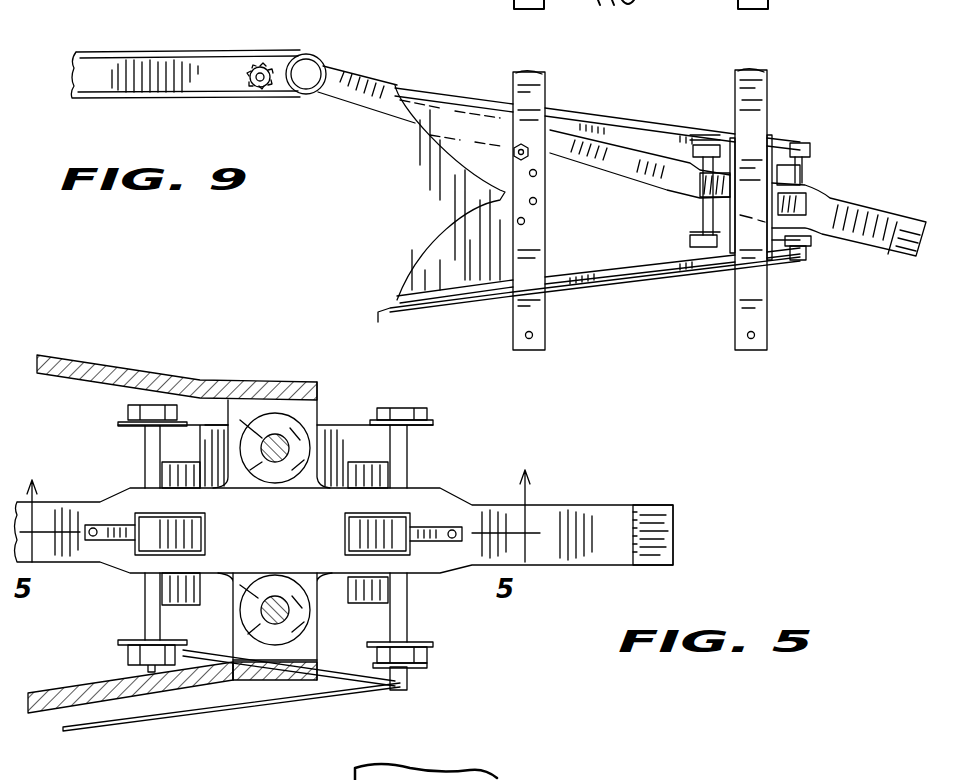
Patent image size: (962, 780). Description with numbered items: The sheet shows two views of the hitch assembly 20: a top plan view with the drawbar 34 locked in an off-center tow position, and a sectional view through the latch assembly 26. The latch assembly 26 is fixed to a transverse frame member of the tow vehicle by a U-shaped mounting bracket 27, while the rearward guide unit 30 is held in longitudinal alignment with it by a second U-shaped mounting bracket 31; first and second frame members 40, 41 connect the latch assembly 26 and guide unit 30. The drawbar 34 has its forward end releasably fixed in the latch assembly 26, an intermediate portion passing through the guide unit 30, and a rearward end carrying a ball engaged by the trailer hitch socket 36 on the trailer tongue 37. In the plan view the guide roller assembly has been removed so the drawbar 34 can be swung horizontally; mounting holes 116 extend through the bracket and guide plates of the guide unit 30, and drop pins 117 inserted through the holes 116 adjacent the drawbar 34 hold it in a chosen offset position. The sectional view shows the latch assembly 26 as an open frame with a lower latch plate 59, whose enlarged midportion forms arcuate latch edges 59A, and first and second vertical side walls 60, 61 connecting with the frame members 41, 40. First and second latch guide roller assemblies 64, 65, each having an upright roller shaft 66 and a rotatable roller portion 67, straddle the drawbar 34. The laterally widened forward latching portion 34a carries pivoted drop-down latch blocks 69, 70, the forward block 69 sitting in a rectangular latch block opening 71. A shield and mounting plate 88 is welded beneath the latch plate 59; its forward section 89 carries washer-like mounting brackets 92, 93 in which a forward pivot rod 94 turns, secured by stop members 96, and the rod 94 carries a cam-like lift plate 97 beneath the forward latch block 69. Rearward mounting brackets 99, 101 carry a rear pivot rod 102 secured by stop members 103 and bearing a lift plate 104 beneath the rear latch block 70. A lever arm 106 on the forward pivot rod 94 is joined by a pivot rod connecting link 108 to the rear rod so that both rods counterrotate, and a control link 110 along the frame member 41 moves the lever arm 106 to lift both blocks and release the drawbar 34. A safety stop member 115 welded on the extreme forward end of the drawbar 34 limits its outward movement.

In FIG. 9, the hitch assembly 20 is at (662, 312).
In FIG. 9, the latch assembly 26 is at (824, 263).
In FIG. 5, the latch assembly 26 is at (448, 684).
In FIG. 9, the U-shaped mounting bracket 27 is at (770, 104).
In FIG. 9, the guide unit 30 is at (415, 265).
In FIG. 9, the U-shaped mounting bracket 31 is at (545, 100).
In FIG. 9, the drawbar 34 is at (362, 110).
In FIG. 5, the forward latching portion of drawbar 34a is at (425, 488).
In FIG. 9, the trailer hitch socket 36 is at (322, 58).
In FIG. 9, the trailer tongue 37 is at (132, 60).
In FIG. 9, the first frame member 40 is at (628, 122).
In FIG. 5, the first frame member 40 is at (60, 356).
In FIG. 9, the second frame member 41 is at (629, 262).
In FIG. 5, the second frame member 41 is at (45, 712).
In FIG. 5, the latch plate 59 is at (296, 412).
In FIG. 5, the arcuate latch edges 59A is at (258, 552).
In FIG. 5, the first vertical side wall 60 is at (296, 680).
In FIG. 5, the second vertical side wall 61 is at (280, 380).
In FIG. 5, the first latch guide roller assembly 64 is at (240, 630).
In FIG. 5, the second latch guide roller assembly 65 is at (262, 384).
In FIG. 5, the roller shaft 66 is at (286, 462).
In FIG. 5, the roller portion 67 is at (300, 430).
In FIG. 5, the forward latch block 69 is at (410, 515).
In FIG. 5, the rearward latch block 70 is at (165, 540).
In FIG. 5, the latch block opening 71 is at (385, 528).
In FIG. 5, the shield and mounting plate 88 is at (198, 389).
In FIG. 5, the forward section of mounting plate 89 is at (340, 425).
In FIG. 5, the first mounting bracket 92 is at (430, 650).
In FIG. 5, the second mounting bracket 93 is at (430, 426).
In FIG. 5, the forward pivot rod 94 is at (410, 630).
In FIG. 5, the stop members 96 is at (416, 410).
In FIG. 5, the lift plate 97 is at (372, 590).
In FIG. 5, the first rearward mounting bracket 99 is at (120, 642).
In FIG. 5, the second rearward mounting bracket 101 is at (120, 424).
In FIG. 5, the rear pivot rod 102 is at (143, 612).
In FIG. 5, the stop members 103 is at (130, 660).
In FIG. 5, the lift plate 104 is at (175, 472).
In FIG. 5, the lever arm 106 is at (412, 670).
In FIG. 5, the pivot rod connecting link 108 is at (345, 688).
In FIG. 9, the control link 110 is at (596, 298).
In FIG. 5, the control link 110 is at (162, 722).
In FIG. 9, the safety stop member 115 is at (912, 226).
In FIG. 5, the safety stop member 115 is at (670, 524).
In FIG. 9, the mounting holes 116 is at (538, 174).
In FIG. 9, the drop pin 117 is at (512, 152).